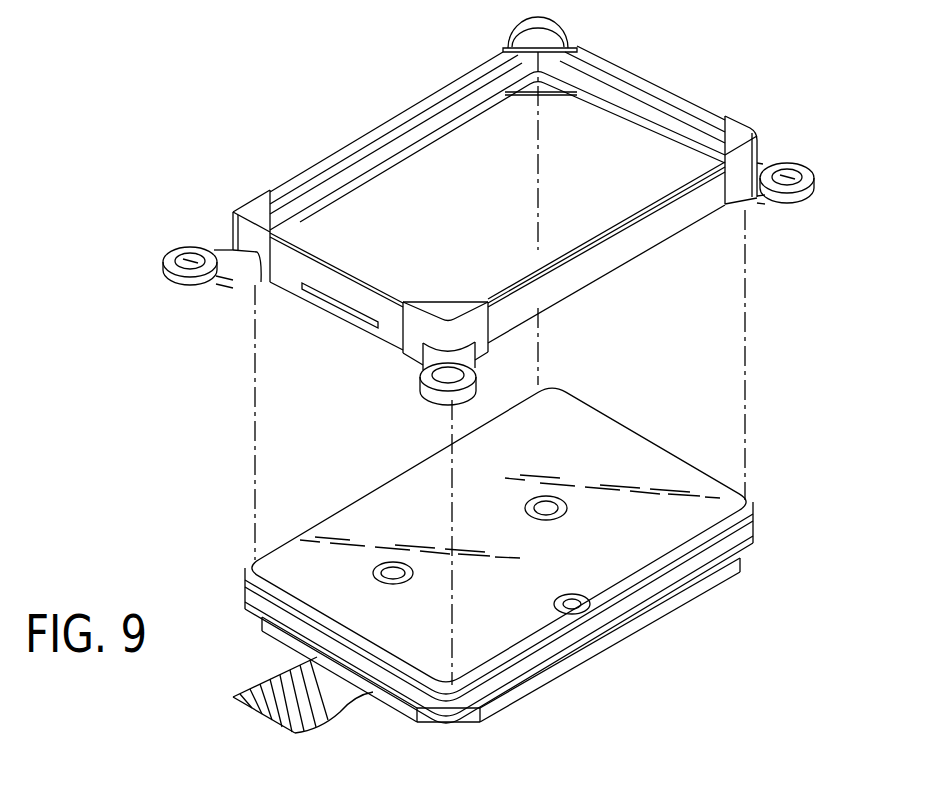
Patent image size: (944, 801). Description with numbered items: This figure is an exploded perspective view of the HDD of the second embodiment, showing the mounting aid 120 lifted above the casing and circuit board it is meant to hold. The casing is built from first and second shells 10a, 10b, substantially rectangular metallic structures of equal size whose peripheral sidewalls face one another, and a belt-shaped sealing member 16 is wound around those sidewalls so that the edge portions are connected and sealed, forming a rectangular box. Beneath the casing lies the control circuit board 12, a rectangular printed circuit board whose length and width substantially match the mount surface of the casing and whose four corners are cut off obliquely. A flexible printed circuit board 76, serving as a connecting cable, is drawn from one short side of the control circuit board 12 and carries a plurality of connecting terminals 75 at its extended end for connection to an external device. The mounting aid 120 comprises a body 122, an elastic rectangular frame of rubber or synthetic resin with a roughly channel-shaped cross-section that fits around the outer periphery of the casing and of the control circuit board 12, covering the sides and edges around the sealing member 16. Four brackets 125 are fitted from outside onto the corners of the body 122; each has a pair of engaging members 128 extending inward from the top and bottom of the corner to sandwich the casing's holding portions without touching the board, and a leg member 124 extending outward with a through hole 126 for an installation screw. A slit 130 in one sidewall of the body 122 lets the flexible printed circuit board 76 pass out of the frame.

The mounting aid 120 is at (373, 120).
The body 122 is at (590, 266).
The leg member 124 is at (560, 27).
The bracket 125 is at (768, 142).
The through hole 126 is at (792, 172).
The engaging member 128 is at (530, 100).
The slit 130 is at (320, 312).
The first shell 10a is at (615, 617).
The second shell 10b is at (692, 548).
The control circuit board 12 is at (560, 660).
The sealing member 16 is at (652, 568).
The connecting terminals 75 is at (250, 697).
The flexible printed circuit board 76 is at (290, 680).